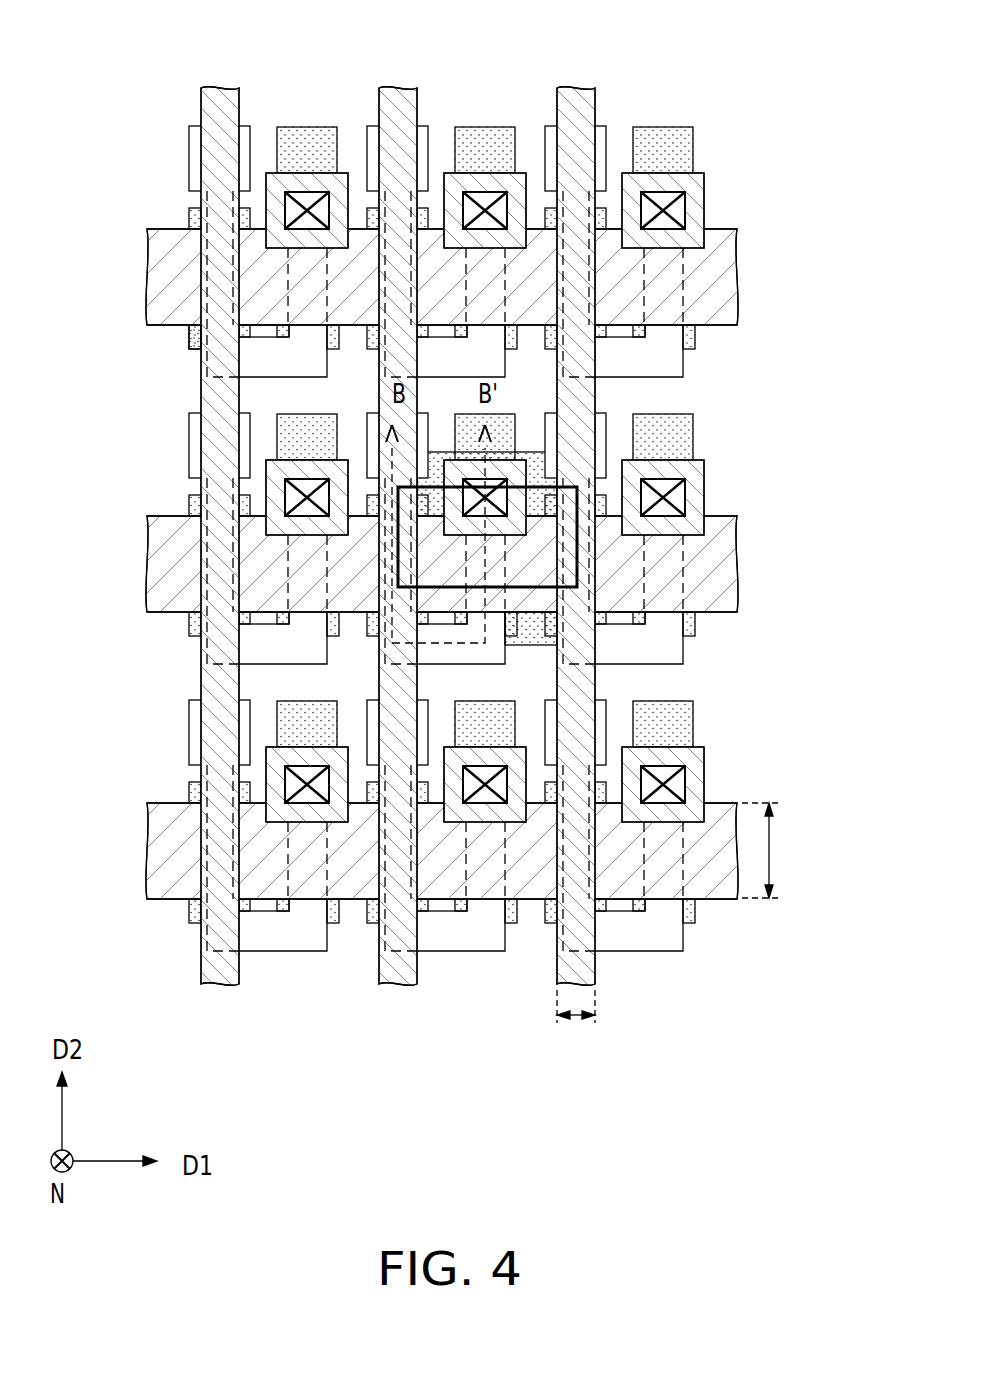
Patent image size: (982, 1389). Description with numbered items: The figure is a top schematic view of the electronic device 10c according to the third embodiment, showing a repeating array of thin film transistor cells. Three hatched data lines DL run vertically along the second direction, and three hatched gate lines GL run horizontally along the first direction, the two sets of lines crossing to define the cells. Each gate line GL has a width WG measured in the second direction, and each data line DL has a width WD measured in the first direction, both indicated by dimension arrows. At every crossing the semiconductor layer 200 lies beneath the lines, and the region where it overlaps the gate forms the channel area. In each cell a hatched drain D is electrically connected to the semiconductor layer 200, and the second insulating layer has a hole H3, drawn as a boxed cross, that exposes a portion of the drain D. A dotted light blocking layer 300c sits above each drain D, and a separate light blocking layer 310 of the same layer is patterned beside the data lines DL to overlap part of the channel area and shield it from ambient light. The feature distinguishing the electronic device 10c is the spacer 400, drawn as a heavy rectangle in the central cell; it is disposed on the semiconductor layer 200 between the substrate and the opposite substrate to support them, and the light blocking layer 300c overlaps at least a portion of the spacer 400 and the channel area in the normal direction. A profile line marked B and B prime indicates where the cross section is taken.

The semiconductor layer 200 is at (189, 142).
The light blocking layer 300c is at (313, 127).
The light blocking layer 310 is at (189, 340).
The spacer 400 is at (577, 552).
The electronic device 10c is at (817, 1095).
The data line DL is at (221, 96).
The gate line GL is at (165, 270).
The drain D is at (340, 178).
The hole H3 is at (302, 207).
The width of the gate line WG is at (779, 850).
The width of the data line WD is at (576, 1027).